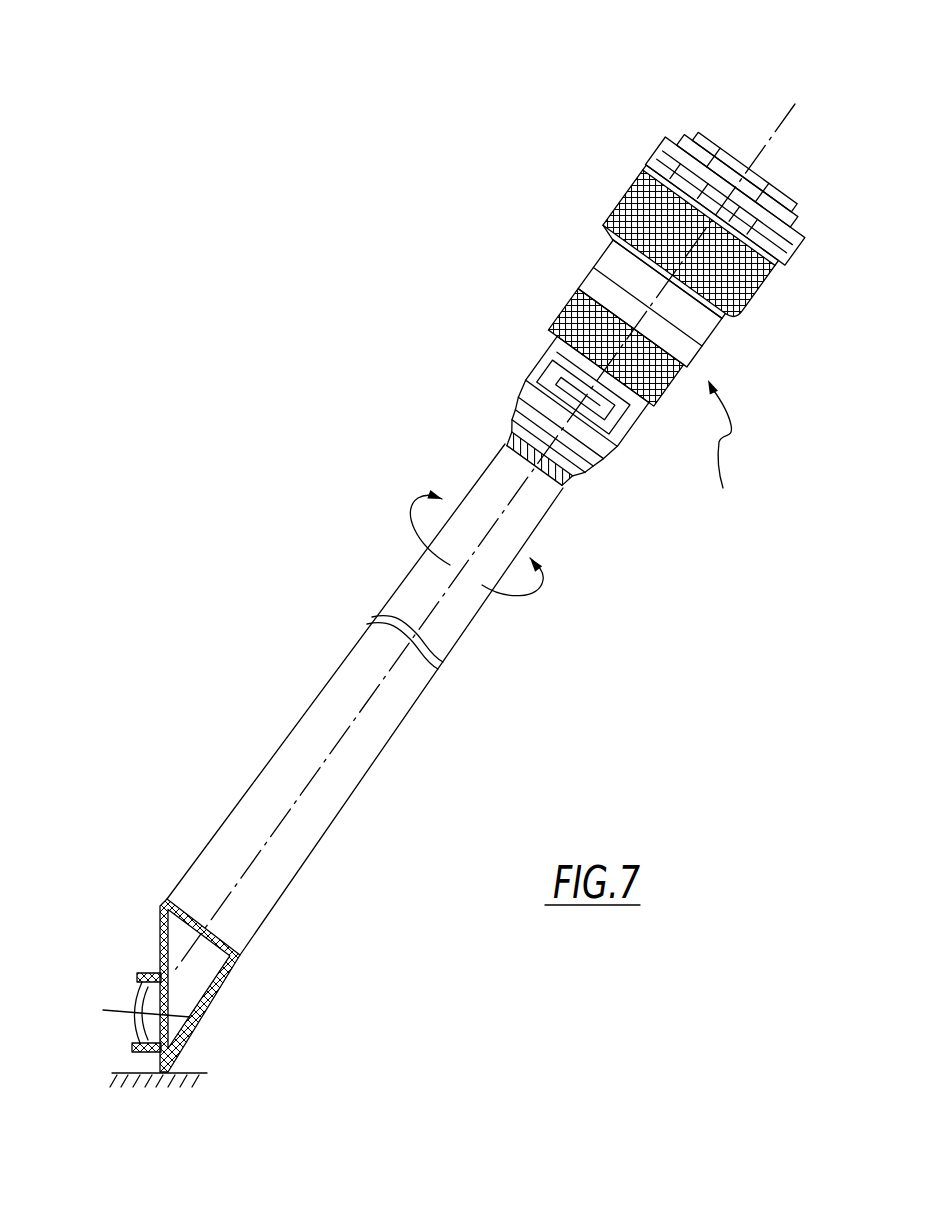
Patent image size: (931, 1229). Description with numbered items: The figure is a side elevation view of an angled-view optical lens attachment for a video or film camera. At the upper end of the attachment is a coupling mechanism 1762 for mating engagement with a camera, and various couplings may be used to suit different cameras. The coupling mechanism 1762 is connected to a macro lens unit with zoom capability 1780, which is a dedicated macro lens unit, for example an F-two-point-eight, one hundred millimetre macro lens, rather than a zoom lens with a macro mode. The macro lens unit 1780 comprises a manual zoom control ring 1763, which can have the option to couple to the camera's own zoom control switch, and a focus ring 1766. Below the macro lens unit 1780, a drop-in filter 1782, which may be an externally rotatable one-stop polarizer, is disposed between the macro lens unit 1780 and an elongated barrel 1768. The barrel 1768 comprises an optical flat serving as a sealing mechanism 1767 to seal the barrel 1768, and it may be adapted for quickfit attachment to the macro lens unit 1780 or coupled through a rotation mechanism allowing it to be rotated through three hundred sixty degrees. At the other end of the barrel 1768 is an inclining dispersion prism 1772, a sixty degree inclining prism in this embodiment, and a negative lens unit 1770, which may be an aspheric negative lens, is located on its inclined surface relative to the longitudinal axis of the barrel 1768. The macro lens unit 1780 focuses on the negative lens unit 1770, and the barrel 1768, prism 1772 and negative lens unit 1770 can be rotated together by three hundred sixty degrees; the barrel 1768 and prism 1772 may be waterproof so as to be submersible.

The coupling mechanism 1762 is at (707, 130).
The manual zoom control ring 1763 is at (632, 188).
The focus ring 1766 is at (577, 298).
The sealing mechanism 1767 is at (533, 449).
The barrel 1768 is at (291, 749).
The negative lens unit 1770 is at (170, 994).
The inclining dispersion prism 1772 is at (172, 987).
The macro lens unit with zoom capability 1780 is at (721, 456).
The drop-in filter 1782 is at (553, 371).